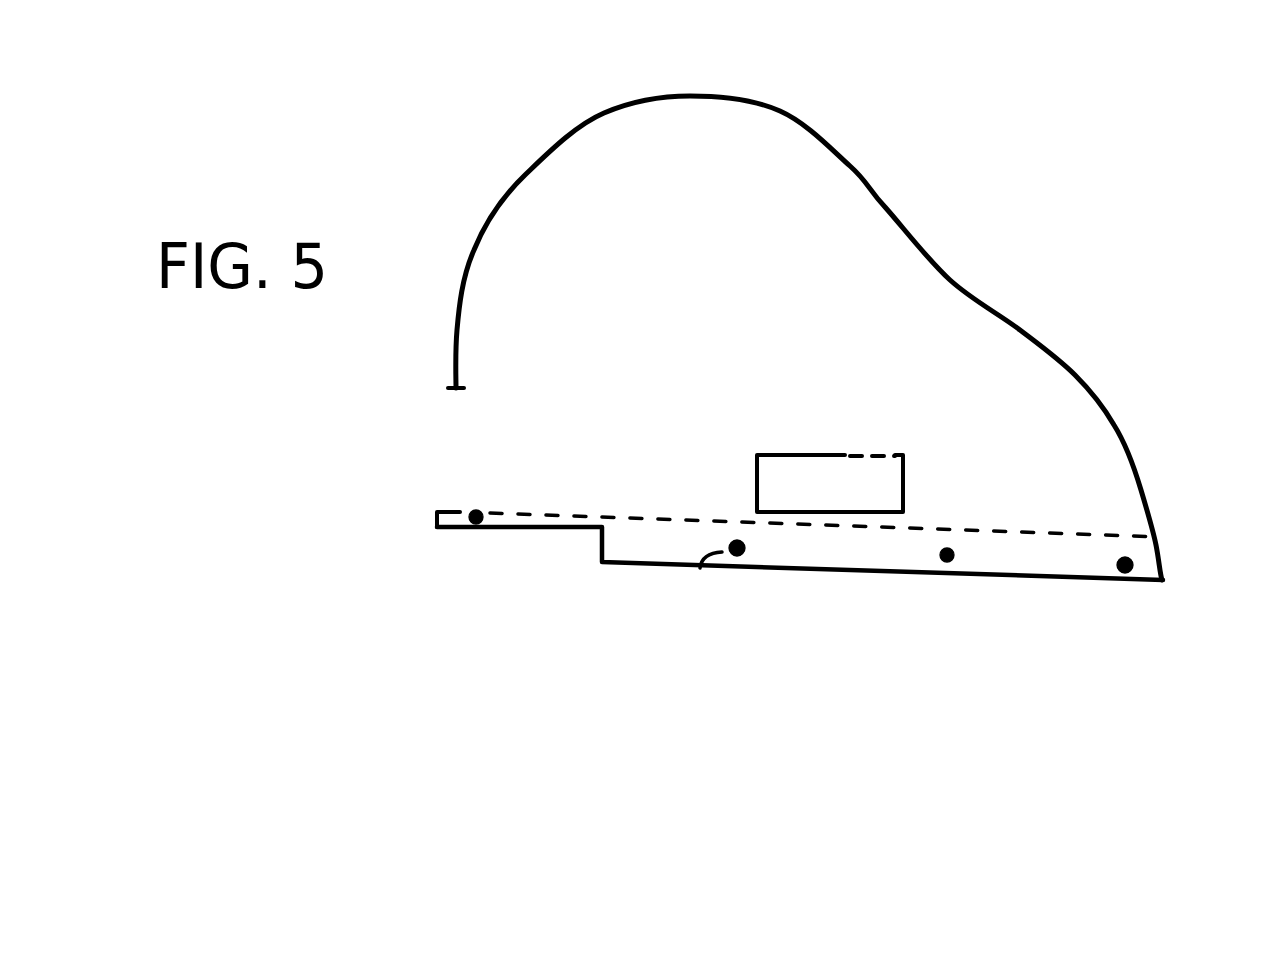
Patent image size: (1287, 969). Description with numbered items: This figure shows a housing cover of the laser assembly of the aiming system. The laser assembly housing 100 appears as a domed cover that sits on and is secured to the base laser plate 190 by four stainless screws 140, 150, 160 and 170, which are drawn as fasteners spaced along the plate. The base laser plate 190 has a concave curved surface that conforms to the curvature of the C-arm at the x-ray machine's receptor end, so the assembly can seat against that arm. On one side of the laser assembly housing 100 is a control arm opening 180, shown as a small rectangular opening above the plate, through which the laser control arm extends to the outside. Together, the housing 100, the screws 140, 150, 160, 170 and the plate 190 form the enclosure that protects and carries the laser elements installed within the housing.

The laser assembly housing 100 is at (820, 258).
The base laser plate 190 is at (1013, 555).
The control arm opening 180 is at (782, 455).
The stainless screw 170 is at (470, 538).
The stainless screw 160 is at (699, 572).
The stainless screw 150 is at (927, 557).
The stainless screw 140 is at (1107, 565).